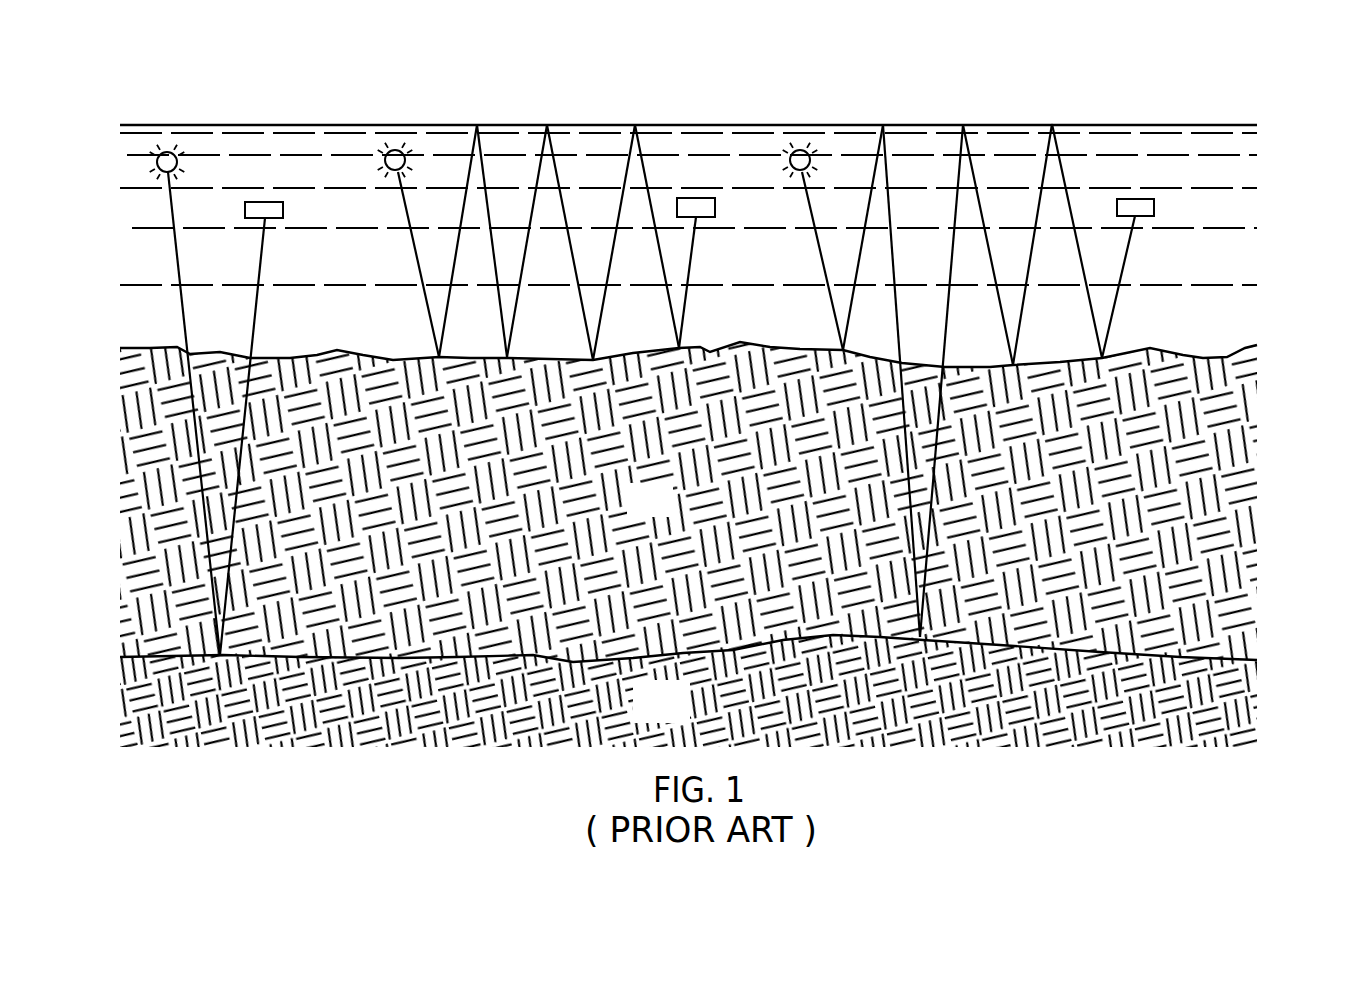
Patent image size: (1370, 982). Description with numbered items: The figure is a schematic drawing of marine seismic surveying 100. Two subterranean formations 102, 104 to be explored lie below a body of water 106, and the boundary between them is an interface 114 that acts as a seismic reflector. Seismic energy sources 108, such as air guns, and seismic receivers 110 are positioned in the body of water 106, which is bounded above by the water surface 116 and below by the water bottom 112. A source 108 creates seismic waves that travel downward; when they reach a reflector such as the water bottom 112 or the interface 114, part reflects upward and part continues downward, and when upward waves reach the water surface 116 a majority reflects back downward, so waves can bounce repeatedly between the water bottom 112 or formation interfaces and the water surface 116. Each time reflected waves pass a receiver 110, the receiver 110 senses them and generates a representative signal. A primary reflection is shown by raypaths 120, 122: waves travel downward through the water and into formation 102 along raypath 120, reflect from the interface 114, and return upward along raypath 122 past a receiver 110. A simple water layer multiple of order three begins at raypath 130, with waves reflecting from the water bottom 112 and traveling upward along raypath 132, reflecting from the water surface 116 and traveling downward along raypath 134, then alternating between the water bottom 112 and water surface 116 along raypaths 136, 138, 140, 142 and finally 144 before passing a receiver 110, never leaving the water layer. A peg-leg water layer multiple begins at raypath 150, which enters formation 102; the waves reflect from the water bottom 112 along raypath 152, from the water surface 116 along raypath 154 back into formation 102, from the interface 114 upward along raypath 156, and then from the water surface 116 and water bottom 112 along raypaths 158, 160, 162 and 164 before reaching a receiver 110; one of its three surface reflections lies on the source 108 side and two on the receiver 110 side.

The marine seismic surveying 100 is at (293, 88).
The subterranean formation 102 is at (671, 513).
The subterranean formation 104 is at (681, 715).
The body of water 106 is at (346, 333).
The seismic energy source 108 is at (167, 151).
The seismic receiver 110 is at (283, 210).
The water bottom 112 is at (1257, 345).
The interface 114 is at (1230, 657).
The water surface 116 is at (1236, 124).
The raypath 120 is at (189, 265).
The raypath 122 is at (261, 262).
The raypath 130 is at (418, 265).
The raypath 132 is at (452, 272).
The raypath 134 is at (484, 172).
The raypath 136 is at (522, 272).
The raypath 138 is at (558, 172).
The raypath 140 is at (601, 322).
The raypath 142 is at (645, 166).
The raypath 144 is at (684, 318).
The raypath 150 is at (823, 265).
The raypath 152 is at (859, 262).
The raypath 154 is at (890, 212).
The raypath 156 is at (949, 290).
The raypath 158 is at (974, 172).
The raypath 160 is at (1021, 320).
The raypath 162 is at (1061, 163).
The raypath 164 is at (1113, 318).